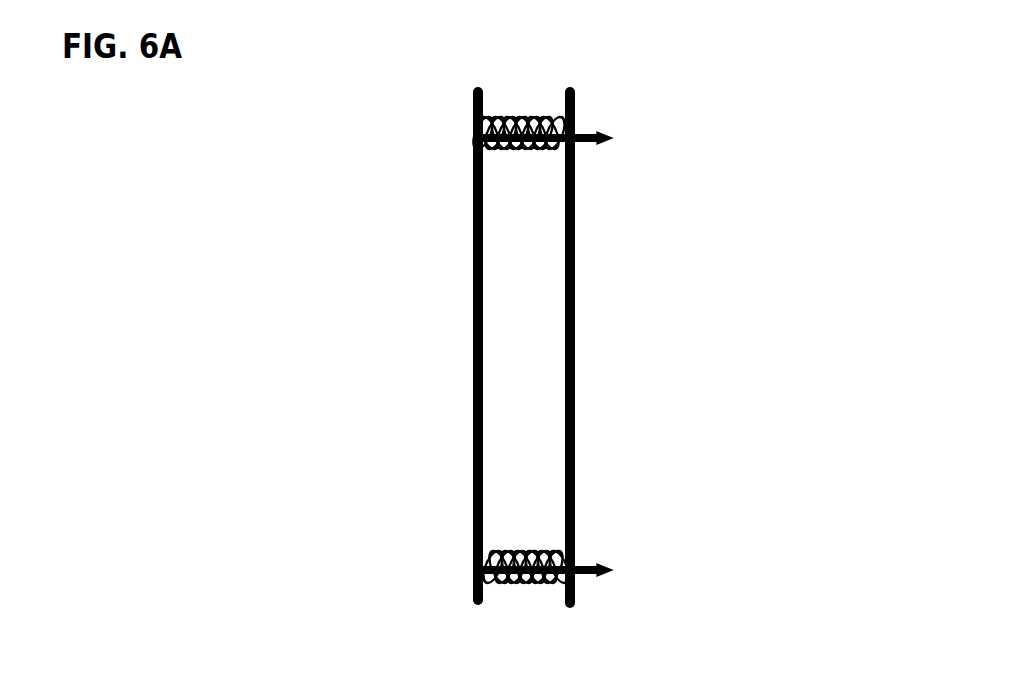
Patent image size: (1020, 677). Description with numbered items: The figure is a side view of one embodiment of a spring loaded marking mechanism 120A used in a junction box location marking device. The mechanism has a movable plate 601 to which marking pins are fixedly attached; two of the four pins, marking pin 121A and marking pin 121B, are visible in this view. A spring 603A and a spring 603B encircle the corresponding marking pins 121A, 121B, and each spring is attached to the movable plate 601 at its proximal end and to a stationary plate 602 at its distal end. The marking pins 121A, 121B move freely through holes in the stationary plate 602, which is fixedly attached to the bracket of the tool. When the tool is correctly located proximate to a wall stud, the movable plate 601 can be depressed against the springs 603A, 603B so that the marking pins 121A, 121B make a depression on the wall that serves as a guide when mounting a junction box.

The spring loaded marking mechanism 120A is at (617, 322).
The movable plate 601 is at (473, 238).
The stationary plate 602 is at (687, 283).
The spring 603A is at (517, 118).
The spring 603B is at (515, 590).
The marking pin 121A is at (612, 138).
The marking pin 121B is at (647, 547).